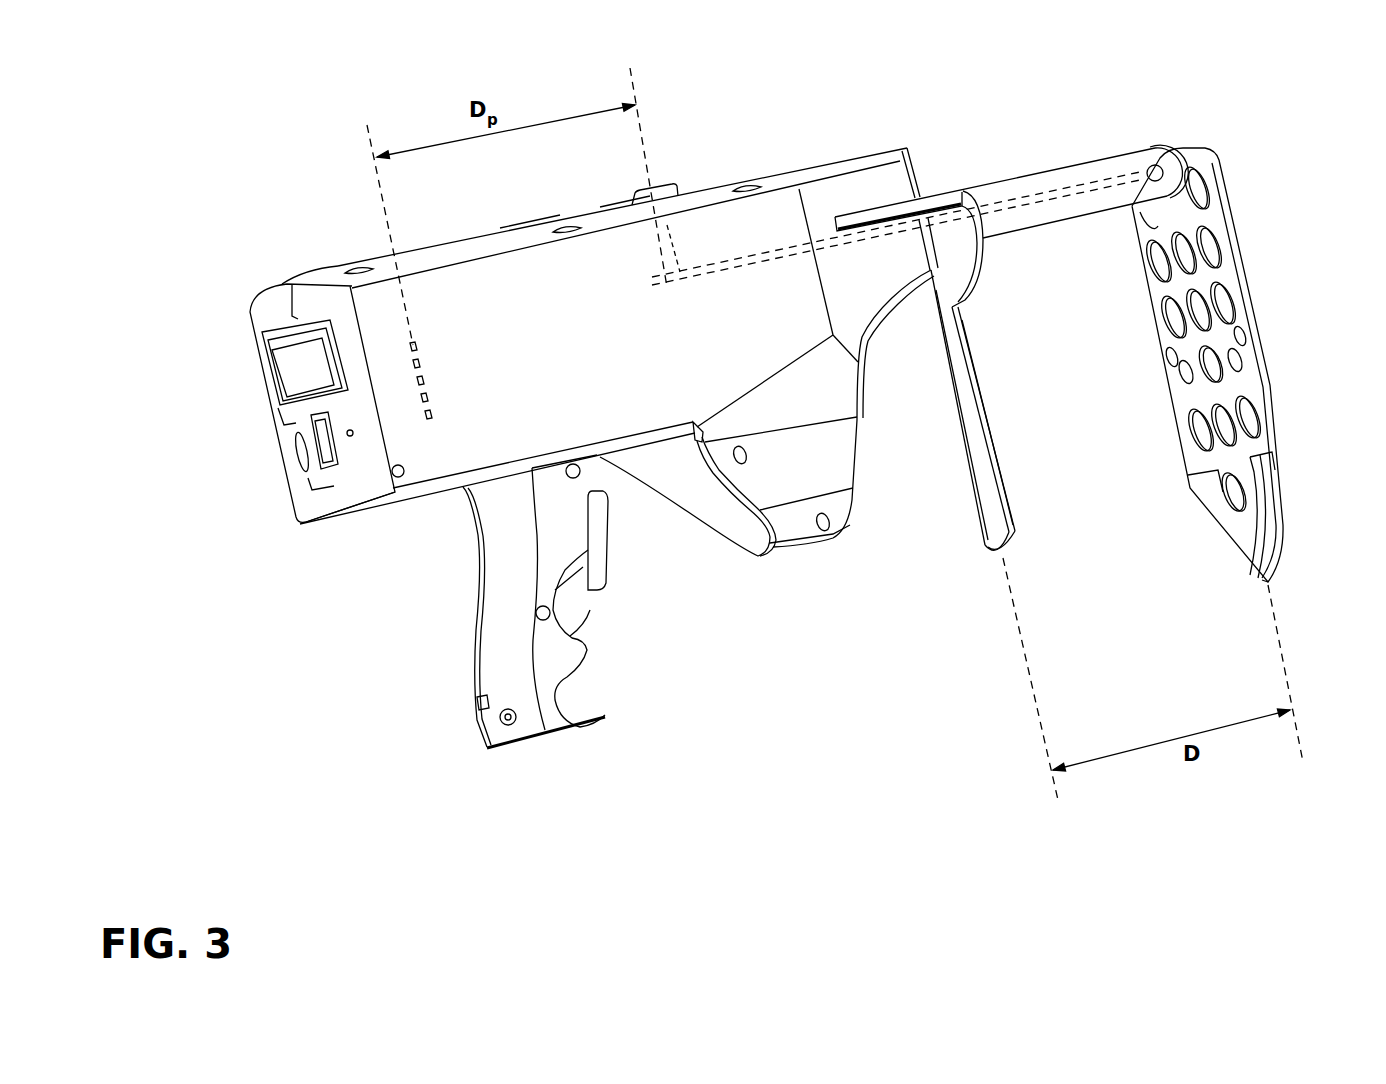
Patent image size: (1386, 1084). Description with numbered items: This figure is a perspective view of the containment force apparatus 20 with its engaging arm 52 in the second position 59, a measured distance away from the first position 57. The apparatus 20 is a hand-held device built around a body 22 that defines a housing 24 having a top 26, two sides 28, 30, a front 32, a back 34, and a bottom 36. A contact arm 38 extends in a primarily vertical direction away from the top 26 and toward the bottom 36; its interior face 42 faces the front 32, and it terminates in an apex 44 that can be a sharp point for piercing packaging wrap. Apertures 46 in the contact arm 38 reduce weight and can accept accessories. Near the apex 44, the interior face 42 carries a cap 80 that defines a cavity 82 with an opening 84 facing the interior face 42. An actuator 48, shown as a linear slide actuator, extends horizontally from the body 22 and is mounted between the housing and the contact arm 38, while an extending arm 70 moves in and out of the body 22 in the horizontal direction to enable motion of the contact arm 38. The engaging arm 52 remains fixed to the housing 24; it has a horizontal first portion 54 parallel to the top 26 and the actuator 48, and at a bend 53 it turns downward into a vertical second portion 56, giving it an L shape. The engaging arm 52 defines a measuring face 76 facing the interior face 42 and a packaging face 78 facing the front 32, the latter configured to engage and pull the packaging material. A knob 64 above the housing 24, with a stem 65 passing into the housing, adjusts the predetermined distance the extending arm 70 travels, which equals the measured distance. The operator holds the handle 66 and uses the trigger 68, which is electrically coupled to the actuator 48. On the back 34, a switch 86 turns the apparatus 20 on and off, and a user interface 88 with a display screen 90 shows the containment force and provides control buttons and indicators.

The containment force apparatus 20 is at (302, 71).
The body 22 is at (357, 268).
The housing 24 is at (561, 210).
The top 26 is at (430, 247).
The side 28 is at (246, 398).
The side 30 is at (545, 306).
The front 32 is at (934, 161).
The back 34 is at (380, 477).
The bottom 36 is at (728, 512).
The contact arm 38 is at (1257, 347).
The interior face 42 is at (1202, 398).
The apex 44 is at (1270, 585).
The apertures 46 is at (1223, 303).
The actuator 48 is at (1095, 165).
The engaging arm 52 is at (1010, 537).
The bend 53 is at (963, 193).
The first portion 54 is at (880, 215).
The second portion 56 is at (970, 425).
The first position 57 is at (1297, 723).
The second position 59 is at (1030, 690).
The knob 64 is at (668, 183).
The stem 65 is at (690, 237).
The handle 66 is at (488, 673).
The trigger 68 is at (600, 553).
The extending arm 70 is at (1015, 190).
The measuring face 76 is at (993, 417).
The packaging face 78 is at (987, 472).
The cap 80 is at (1237, 533).
The cavity 82 is at (1230, 490).
The opening 84 is at (1241, 439).
The switch 86 is at (320, 453).
The user interface 88 is at (263, 380).
The display screen 90 is at (310, 369).